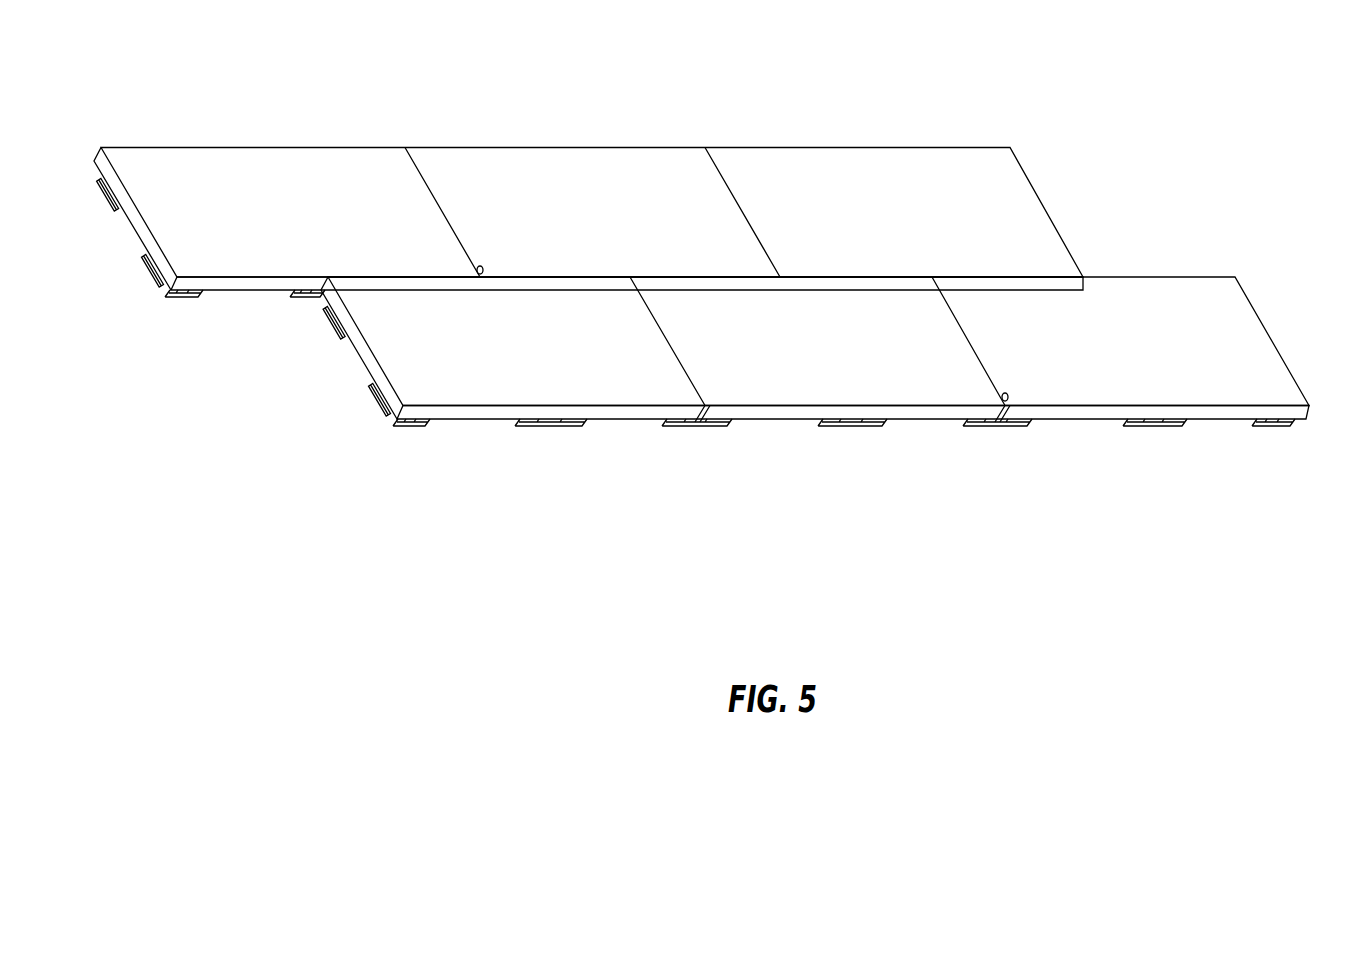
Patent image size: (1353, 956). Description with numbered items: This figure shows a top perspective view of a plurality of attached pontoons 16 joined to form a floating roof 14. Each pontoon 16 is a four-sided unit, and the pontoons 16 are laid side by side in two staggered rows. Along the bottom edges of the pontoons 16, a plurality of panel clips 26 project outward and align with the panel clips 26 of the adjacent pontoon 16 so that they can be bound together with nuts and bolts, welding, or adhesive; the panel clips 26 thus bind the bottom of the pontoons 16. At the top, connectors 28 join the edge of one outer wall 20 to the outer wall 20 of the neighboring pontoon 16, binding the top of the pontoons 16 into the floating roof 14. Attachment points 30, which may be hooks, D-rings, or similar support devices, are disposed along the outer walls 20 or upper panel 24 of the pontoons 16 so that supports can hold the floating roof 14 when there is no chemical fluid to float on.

The floating roof 14 is at (684, 74).
The pontoon 16 is at (243, 158).
The outer wall 20 is at (762, 412).
The upper panel 24 is at (438, 380).
The panel clip 26 is at (328, 317).
The connector 28 is at (743, 212).
The attachment point 30 is at (483, 265).